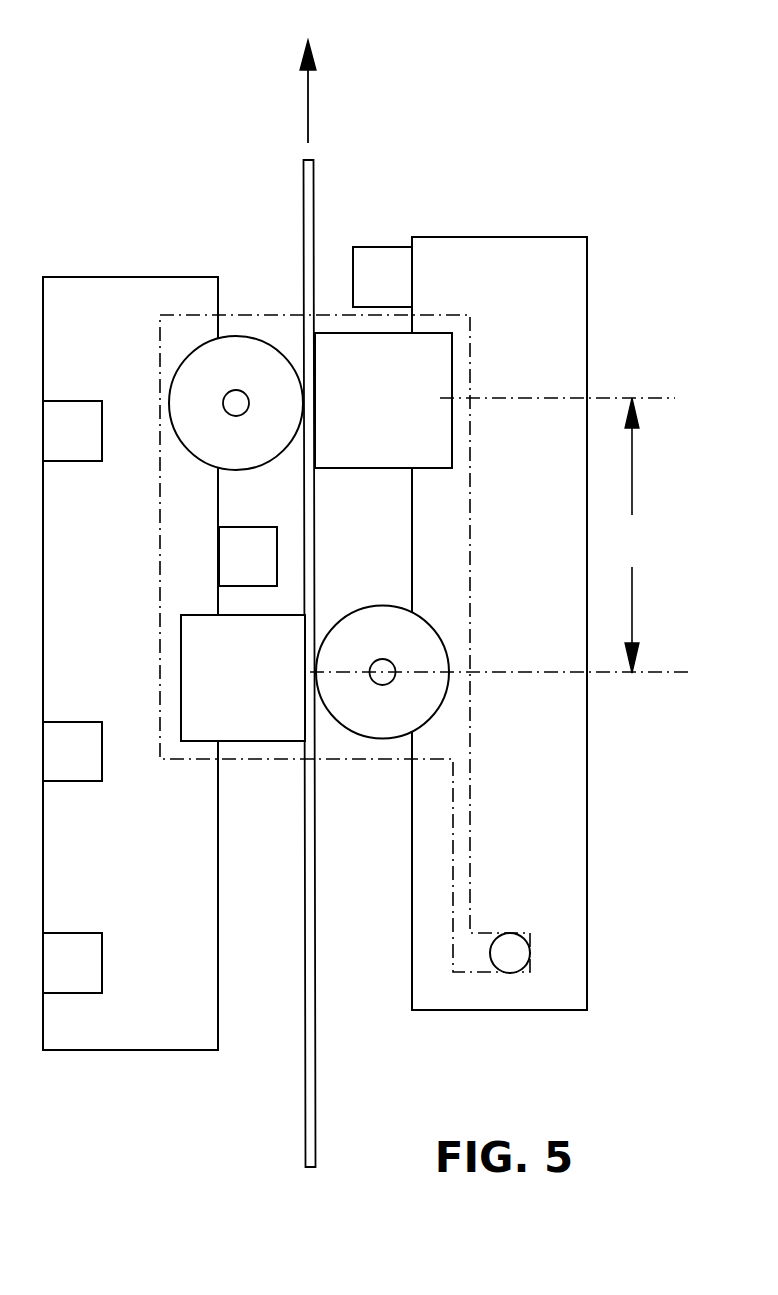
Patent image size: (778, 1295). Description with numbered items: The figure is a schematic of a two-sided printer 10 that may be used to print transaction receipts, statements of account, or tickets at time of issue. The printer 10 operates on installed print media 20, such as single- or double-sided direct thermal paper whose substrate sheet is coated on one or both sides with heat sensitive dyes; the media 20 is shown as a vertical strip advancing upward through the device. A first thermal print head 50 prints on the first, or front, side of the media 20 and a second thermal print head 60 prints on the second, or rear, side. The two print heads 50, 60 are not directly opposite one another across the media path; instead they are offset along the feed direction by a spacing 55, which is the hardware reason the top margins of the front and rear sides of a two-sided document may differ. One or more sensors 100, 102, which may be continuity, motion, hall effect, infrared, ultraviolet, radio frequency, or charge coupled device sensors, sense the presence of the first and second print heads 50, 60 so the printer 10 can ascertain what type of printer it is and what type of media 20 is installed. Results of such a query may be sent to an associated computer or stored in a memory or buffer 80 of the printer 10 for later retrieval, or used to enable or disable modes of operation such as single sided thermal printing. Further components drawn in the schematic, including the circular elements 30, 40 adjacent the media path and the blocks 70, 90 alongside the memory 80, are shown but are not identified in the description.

The printer 10 is at (540, 63).
The print media 20 is at (303, 200).
The first roller 30 is at (254, 380).
The second roller 40 is at (365, 646).
The first thermal print head 50 is at (365, 413).
The spacing 55 is at (632, 535).
The second thermal print head 60 is at (229, 689).
The controller 70 is at (54, 975).
The memory or buffer 80 is at (53, 763).
The processor 90 is at (53, 443).
The sensor 100 is at (404, 291).
The sensor 102 is at (269, 568).